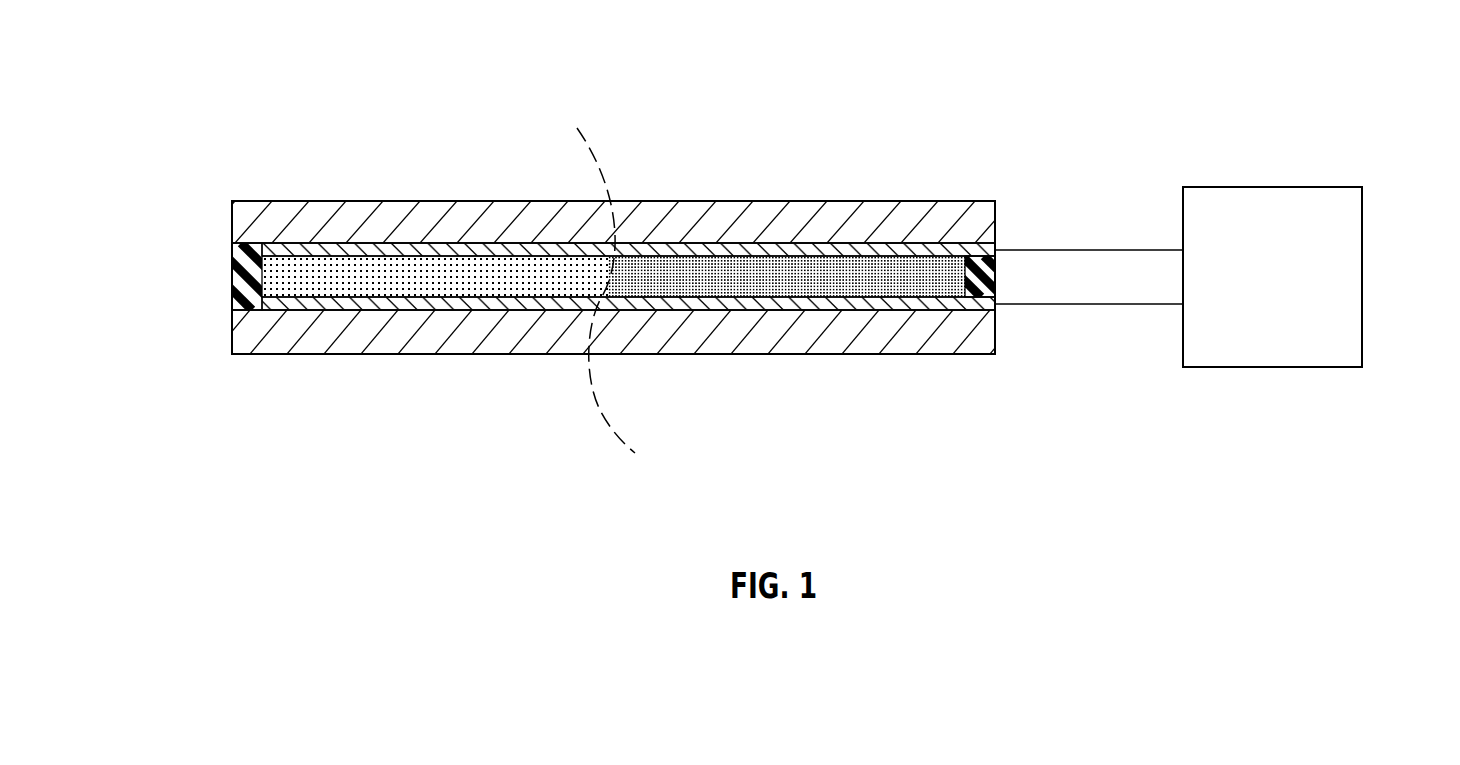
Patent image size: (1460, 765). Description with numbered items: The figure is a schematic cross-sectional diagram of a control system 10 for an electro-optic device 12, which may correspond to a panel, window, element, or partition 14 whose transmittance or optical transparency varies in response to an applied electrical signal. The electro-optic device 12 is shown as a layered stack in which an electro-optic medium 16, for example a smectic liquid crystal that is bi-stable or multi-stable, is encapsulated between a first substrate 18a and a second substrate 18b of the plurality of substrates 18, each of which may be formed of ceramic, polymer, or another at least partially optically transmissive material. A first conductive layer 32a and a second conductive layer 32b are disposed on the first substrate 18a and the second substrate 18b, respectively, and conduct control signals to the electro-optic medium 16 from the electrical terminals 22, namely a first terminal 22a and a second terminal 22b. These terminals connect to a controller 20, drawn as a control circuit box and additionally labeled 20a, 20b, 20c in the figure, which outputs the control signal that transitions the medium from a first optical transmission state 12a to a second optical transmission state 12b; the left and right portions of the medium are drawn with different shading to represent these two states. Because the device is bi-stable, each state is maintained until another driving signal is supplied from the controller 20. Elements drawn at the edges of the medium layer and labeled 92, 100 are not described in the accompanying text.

The control system 10 is at (1080, 110).
The electro-optic device 12 is at (562, 253).
The partition 14 is at (334, 155).
The first optical transmission state 12a is at (465, 273).
The second optical transmission state 12b is at (732, 273).
The electro-optic medium 16 is at (613, 221).
The substrates 18 is at (547, 277).
The first substrate 18a is at (240, 217).
The second substrate 18b is at (237, 338).
The controller 20 is at (1309, 243).
The control circuit 20a is at (1309, 243).
The control circuit 20b is at (1309, 243).
The control circuit 20c is at (1287, 187).
The electrical terminals 22 is at (1089, 278).
The first terminal 22a is at (997, 248).
The second terminal 22b is at (997, 306).
The first conductive layer 32a is at (312, 250).
The second conductive layer 32b is at (312, 300).
The seal 92 is at (204, 276).
The seal member 100 is at (235, 277).